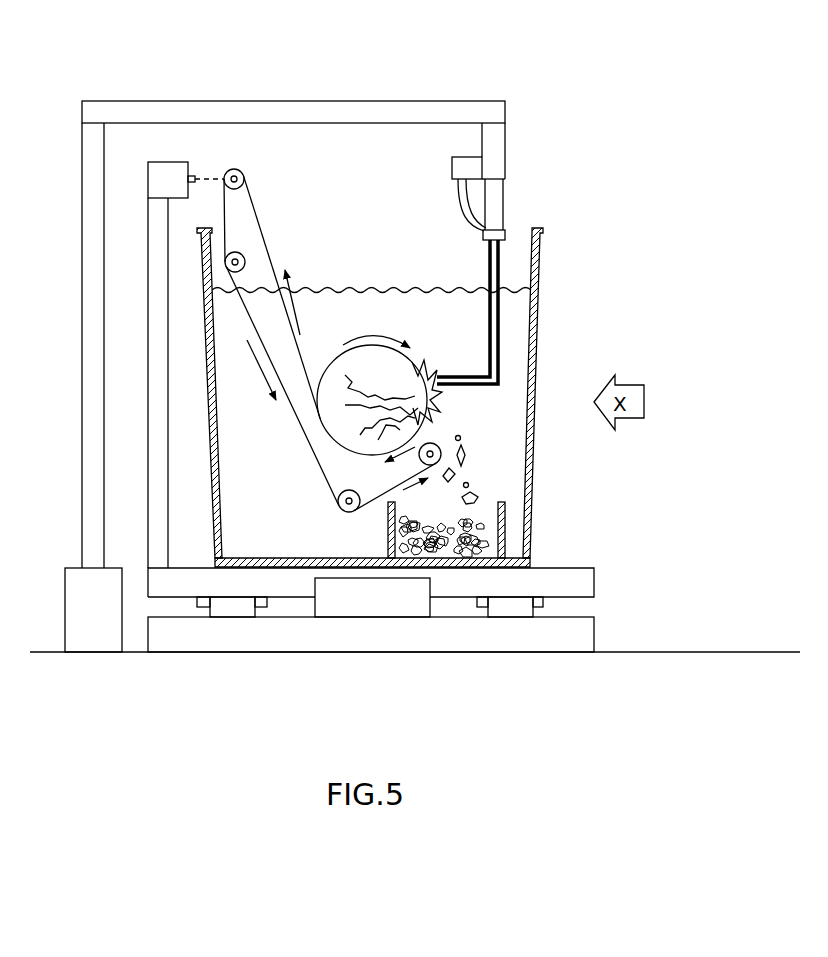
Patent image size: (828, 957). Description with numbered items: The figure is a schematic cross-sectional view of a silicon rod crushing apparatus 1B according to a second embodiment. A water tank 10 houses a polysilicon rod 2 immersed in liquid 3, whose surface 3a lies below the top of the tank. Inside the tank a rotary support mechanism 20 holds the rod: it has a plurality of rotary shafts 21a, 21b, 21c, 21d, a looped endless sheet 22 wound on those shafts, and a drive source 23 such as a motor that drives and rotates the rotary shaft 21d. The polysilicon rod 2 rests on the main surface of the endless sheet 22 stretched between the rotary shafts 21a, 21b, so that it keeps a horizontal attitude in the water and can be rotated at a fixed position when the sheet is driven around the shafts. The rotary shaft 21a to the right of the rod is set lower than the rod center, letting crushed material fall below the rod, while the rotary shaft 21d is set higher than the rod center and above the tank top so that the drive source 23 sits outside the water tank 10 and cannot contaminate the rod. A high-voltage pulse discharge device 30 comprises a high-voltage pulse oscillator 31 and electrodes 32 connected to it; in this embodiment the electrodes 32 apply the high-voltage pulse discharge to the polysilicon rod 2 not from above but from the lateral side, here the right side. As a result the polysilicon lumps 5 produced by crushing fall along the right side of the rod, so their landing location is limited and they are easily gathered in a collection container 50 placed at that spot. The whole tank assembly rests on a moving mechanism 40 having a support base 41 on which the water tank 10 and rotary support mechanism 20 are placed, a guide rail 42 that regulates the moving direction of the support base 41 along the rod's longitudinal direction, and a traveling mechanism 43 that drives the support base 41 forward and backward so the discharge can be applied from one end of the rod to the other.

The silicon rod crushing apparatus 1B is at (332, 26).
The drive source 23 is at (148, 180).
The water tank 10 is at (538, 331).
The liquid 3 is at (268, 448).
The liquid surface 3a is at (362, 287).
The high-voltage pulse discharge device 30 is at (531, 203).
The high-voltage pulse oscillator 31 is at (467, 161).
The electrodes 32 is at (475, 372).
The rotary support mechanism 20 is at (303, 479).
The rotary shaft 21a is at (438, 444).
The rotary shaft 21b is at (343, 511).
The rotary shaft 21c is at (246, 259).
The rotary shaft 21d is at (248, 157).
The endless sheet 22 is at (257, 198).
The polysilicon rod 2 is at (413, 368).
The polysilicon lumps 5 is at (473, 503).
The collection container 50 is at (505, 520).
The moving mechanism 40 is at (608, 560).
The support base 41 is at (594, 582).
The guide rail 42 is at (543, 603).
The traveling mechanism 43 is at (430, 603).